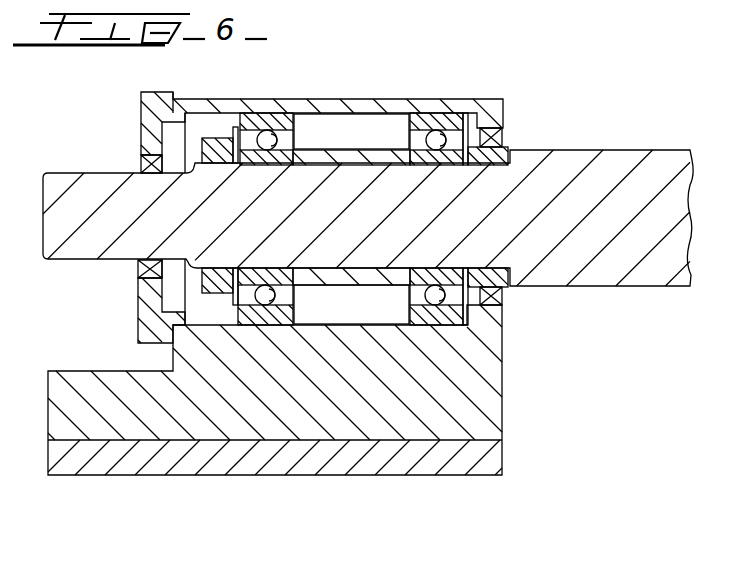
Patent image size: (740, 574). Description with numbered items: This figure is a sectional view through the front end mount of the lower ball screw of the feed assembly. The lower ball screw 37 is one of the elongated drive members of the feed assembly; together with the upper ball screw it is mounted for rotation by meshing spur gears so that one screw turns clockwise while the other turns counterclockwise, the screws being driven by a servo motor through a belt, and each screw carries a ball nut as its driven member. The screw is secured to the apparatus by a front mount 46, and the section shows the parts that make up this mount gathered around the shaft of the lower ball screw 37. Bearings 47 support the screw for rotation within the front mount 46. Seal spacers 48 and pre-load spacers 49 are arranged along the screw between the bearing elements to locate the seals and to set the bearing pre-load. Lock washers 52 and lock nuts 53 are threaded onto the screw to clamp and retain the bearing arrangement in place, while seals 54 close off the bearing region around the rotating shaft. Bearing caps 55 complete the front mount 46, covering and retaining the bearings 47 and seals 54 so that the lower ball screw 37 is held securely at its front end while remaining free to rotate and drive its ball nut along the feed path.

The lower ball screw 37 is at (615, 172).
The front mount 46 is at (480, 362).
The bearings 47 is at (410, 99).
The seal spacers 48 is at (497, 160).
The pre-load spacers 49 is at (347, 275).
The lock washers 52 is at (235, 132).
The lock nuts 53 is at (210, 142).
The seals 54 is at (138, 165).
The bearing caps 55 is at (148, 308).